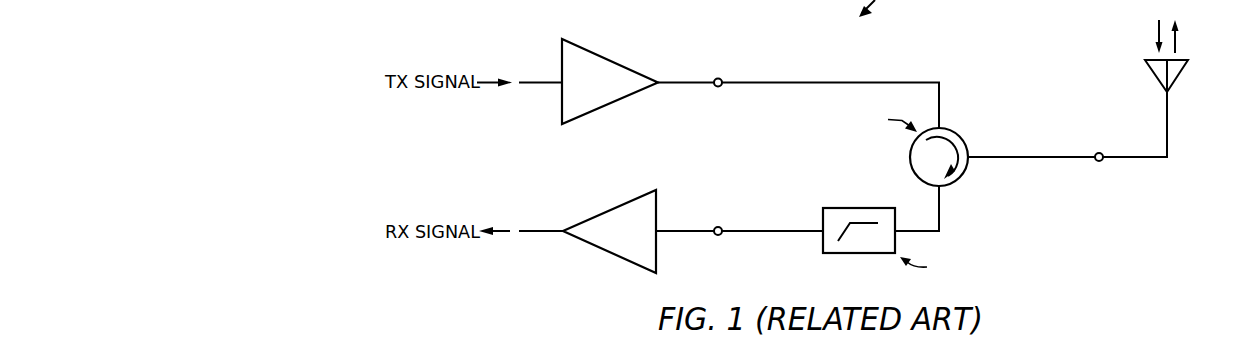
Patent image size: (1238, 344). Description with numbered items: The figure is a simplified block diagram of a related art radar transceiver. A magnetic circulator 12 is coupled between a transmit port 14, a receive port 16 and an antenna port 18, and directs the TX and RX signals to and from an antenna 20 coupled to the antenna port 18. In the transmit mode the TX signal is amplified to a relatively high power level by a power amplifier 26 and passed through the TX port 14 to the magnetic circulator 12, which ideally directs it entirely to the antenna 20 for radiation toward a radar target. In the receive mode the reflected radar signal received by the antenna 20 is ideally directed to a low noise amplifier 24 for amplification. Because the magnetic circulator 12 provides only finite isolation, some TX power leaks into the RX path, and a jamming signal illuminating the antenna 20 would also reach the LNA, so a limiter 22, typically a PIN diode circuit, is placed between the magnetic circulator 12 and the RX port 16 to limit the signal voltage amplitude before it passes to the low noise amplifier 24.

The magnetic circulator 12 is at (959, 136).
The transmit (TX) port 14 is at (715, 87).
The receive (RX) port 16 is at (715, 236).
The antenna port 18 is at (1103, 152).
The antenna 20 is at (1168, 122).
The limiter 22 is at (862, 208).
The low noise amplifier (LNA) 24 is at (650, 240).
The power amplifier (PA) 26 is at (619, 92).